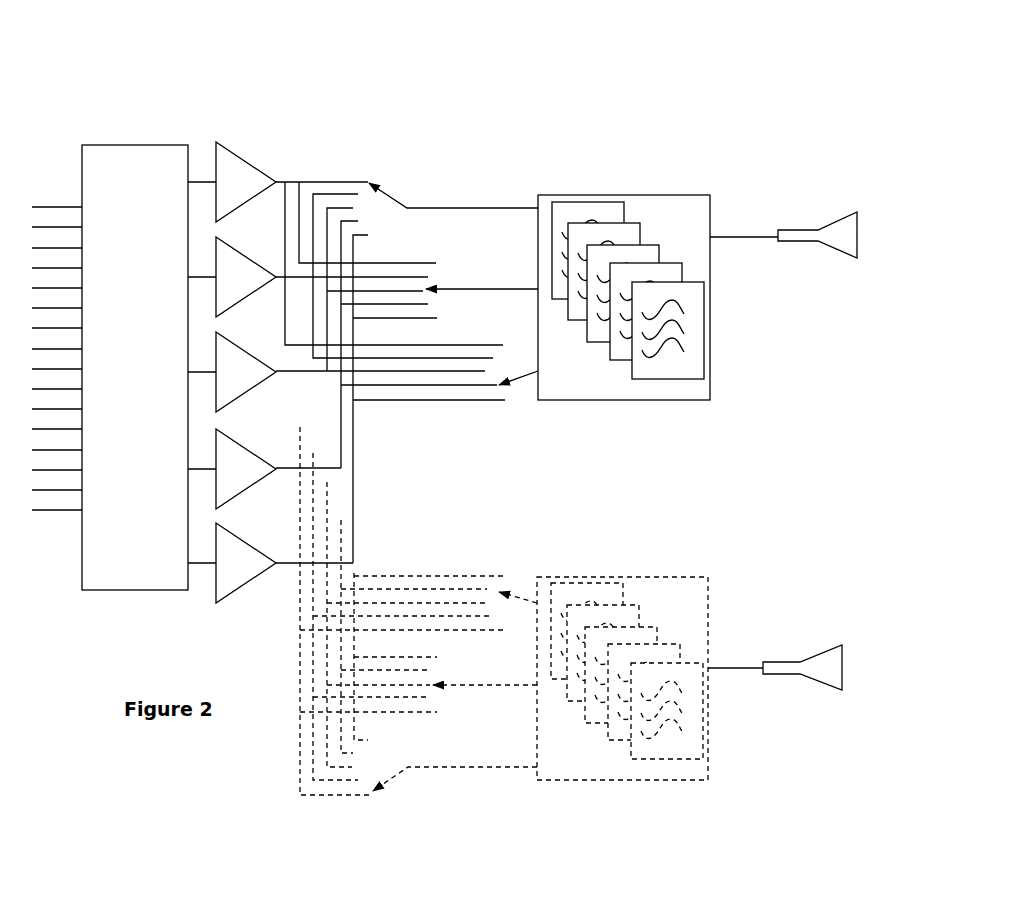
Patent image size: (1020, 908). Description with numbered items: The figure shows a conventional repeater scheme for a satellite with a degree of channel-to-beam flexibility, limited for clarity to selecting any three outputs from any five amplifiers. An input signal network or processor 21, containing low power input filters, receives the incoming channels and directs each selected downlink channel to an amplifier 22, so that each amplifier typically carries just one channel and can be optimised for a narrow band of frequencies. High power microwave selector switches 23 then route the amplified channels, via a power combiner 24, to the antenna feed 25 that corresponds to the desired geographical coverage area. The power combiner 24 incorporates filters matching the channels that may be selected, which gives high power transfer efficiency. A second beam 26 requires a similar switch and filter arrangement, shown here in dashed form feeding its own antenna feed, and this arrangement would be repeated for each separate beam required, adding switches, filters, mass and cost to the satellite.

The input signal network or processor 21 is at (122, 145).
The amplifier 22 is at (258, 163).
The high power microwave selector switches 23 is at (327, 182).
The power combiner 24 is at (630, 195).
The antenna feed 25 is at (789, 228).
The second beam 26 is at (779, 660).